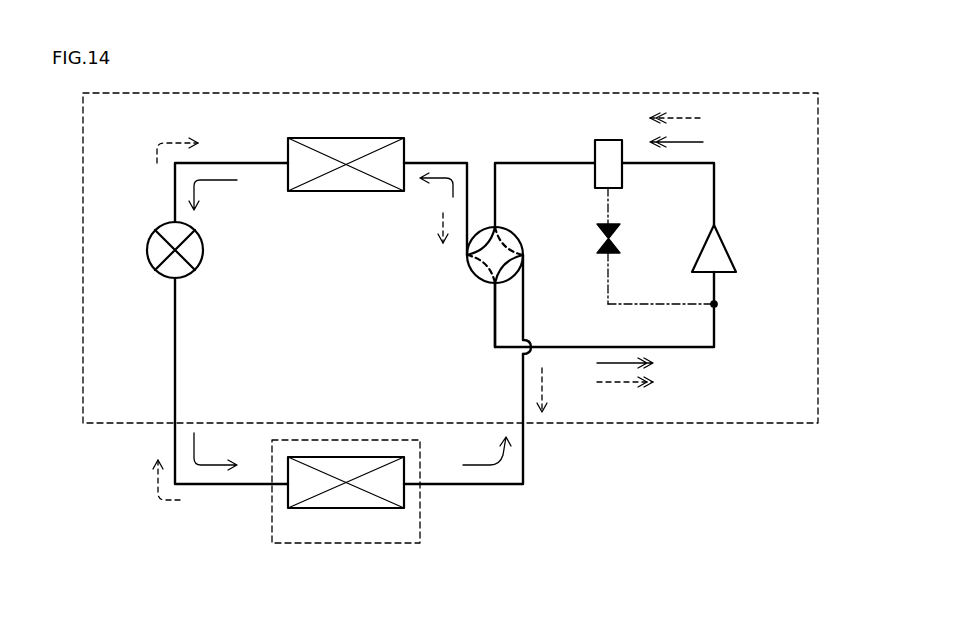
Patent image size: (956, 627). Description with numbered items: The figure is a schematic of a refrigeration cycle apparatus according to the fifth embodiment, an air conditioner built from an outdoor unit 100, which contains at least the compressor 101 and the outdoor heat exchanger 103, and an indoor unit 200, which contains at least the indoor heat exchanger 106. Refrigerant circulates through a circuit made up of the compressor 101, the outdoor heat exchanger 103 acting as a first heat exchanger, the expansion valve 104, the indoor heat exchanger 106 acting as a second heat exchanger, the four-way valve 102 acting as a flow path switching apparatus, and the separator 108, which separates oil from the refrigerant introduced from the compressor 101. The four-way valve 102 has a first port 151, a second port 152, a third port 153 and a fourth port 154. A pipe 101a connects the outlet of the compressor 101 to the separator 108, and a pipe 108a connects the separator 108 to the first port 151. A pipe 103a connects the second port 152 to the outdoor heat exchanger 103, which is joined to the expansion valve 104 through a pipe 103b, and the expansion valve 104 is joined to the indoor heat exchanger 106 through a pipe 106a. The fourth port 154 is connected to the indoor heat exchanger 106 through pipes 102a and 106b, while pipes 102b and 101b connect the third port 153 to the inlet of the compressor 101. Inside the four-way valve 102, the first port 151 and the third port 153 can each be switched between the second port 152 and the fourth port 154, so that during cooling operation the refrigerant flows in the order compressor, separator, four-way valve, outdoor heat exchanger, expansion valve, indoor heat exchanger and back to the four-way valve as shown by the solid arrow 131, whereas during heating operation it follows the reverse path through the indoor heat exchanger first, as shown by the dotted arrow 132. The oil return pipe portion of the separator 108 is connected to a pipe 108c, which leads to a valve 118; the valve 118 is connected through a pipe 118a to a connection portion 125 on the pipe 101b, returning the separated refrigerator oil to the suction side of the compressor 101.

The outdoor unit 100 is at (720, 423).
The compressor 101 is at (720, 246).
The pipe 101a is at (716, 197).
The pipe 101b is at (716, 290).
The four-way valve 102 is at (494, 259).
The pipe 102a is at (525, 298).
The pipe 102b is at (493, 300).
The outdoor heat exchanger 103 is at (345, 150).
The pipe 103a is at (443, 163).
The pipe 103b is at (247, 163).
The expansion valve 104 is at (196, 248).
The indoor heat exchanger 106 is at (345, 497).
The pipe 106a is at (220, 484).
The pipe 106b is at (470, 484).
The separator 108 is at (606, 147).
The pipe 108a is at (516, 163).
The pipe 108c is at (610, 204).
The valve 118 is at (620, 238).
The pipe 118a is at (628, 304).
The connection portion 125 is at (717, 306).
The solid arrow 131 is at (703, 142).
The dotted arrow 132 is at (692, 118).
The first port 151 is at (500, 240).
The second port 152 is at (478, 238).
The third port 153 is at (500, 283).
The fourth port 154 is at (523, 258).
The indoor unit 200 is at (385, 543).